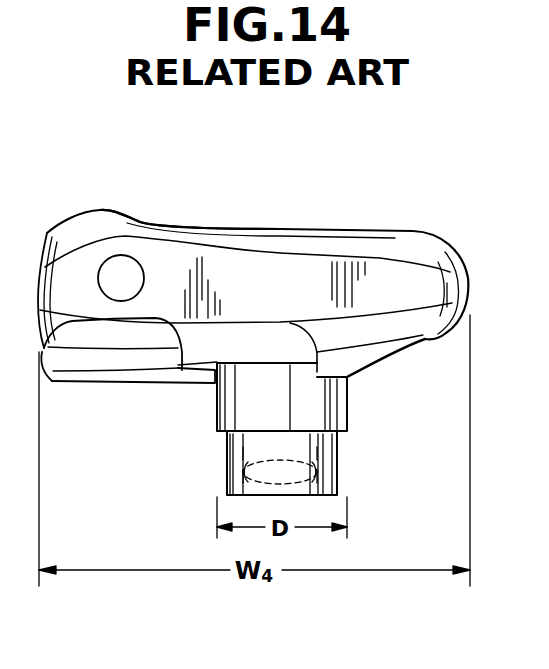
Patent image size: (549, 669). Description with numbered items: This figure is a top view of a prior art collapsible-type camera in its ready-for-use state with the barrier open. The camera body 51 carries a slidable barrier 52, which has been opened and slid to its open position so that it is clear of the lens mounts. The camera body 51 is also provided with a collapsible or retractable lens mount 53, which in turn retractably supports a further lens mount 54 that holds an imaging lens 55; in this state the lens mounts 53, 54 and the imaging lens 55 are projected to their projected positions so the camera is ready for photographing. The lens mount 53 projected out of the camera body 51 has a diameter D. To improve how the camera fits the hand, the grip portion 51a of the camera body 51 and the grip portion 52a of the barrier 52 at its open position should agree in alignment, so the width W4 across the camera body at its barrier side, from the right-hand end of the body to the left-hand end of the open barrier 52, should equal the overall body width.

The camera body 51 is at (362, 228).
The grip portion of the camera body 51a is at (108, 209).
The barrier 52 is at (118, 385).
The grip portion of the barrier 52a is at (85, 385).
The collapsible lens mount 53 is at (348, 415).
The lens mount 54 is at (340, 467).
The imaging lens 55 is at (245, 477).